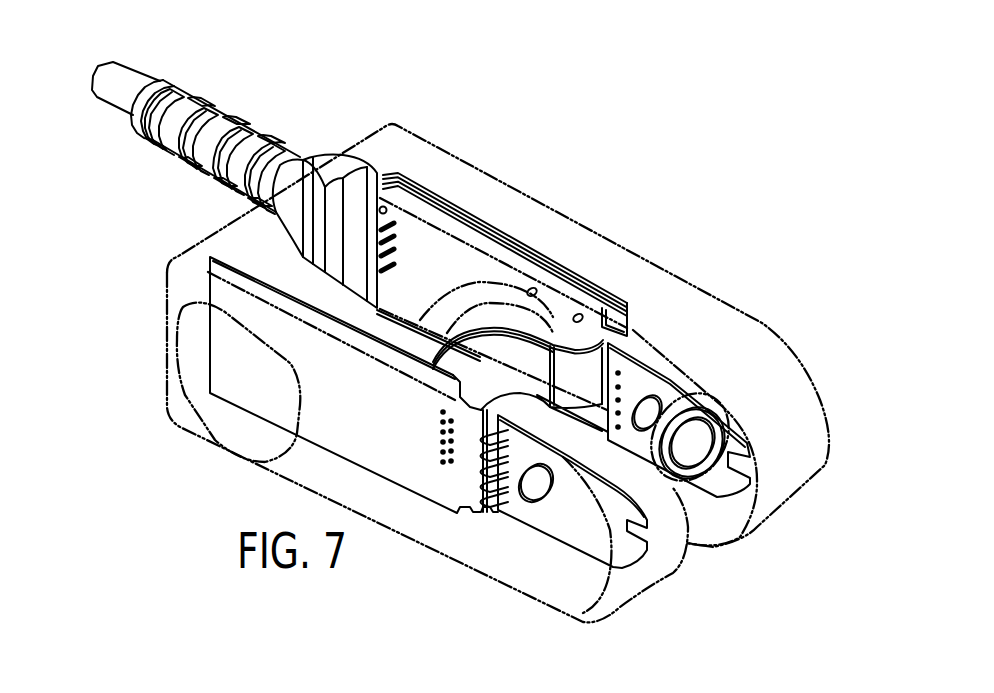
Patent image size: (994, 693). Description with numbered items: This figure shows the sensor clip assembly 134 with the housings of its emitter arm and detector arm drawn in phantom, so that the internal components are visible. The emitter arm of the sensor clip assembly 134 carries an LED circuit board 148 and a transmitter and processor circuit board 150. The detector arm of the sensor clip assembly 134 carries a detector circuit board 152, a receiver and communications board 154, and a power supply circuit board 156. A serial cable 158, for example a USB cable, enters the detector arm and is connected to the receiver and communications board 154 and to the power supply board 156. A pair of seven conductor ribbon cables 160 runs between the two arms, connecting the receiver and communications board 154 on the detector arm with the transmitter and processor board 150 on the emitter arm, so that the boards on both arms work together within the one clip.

The sensor clip assembly 134 is at (600, 177).
The LED circuit board 148 is at (550, 513).
The transmitter and processor circuit board 150 is at (238, 388).
The detector circuit board 152 is at (640, 373).
The receiver and communications board 154 is at (433, 237).
The power supply circuit board 156 is at (570, 272).
The serial cable 158 is at (227, 123).
The seven conductor ribbon cables 160 is at (470, 360).